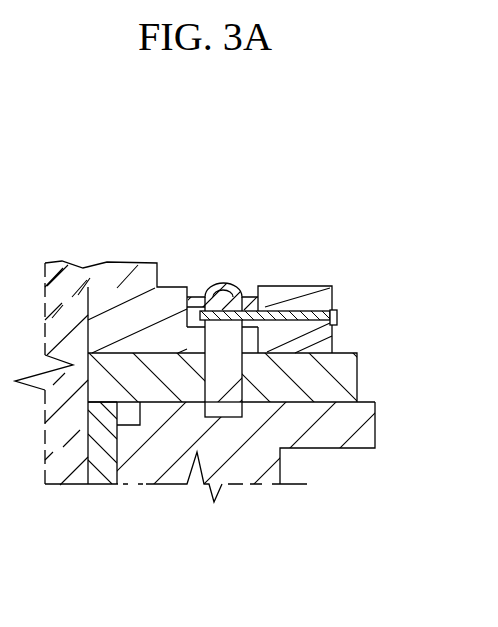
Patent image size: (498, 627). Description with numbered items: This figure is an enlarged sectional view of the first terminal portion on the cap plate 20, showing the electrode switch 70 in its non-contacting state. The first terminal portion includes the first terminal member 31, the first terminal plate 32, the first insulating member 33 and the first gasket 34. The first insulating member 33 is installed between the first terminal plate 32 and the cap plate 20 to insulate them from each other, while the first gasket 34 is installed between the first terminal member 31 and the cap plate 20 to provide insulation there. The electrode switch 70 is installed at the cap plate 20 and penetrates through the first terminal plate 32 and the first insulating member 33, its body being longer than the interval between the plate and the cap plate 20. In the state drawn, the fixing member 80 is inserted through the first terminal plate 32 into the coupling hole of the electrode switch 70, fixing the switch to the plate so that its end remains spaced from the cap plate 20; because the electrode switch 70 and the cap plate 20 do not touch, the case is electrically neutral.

The first terminal member 31 is at (110, 272).
The first terminal plate 32 is at (294, 296).
The first insulating member 33 is at (343, 375).
The first gasket 34 is at (102, 469).
The cap plate 20 is at (162, 468).
The electrode switch 70 is at (222, 305).
The fixing member 80 is at (338, 315).